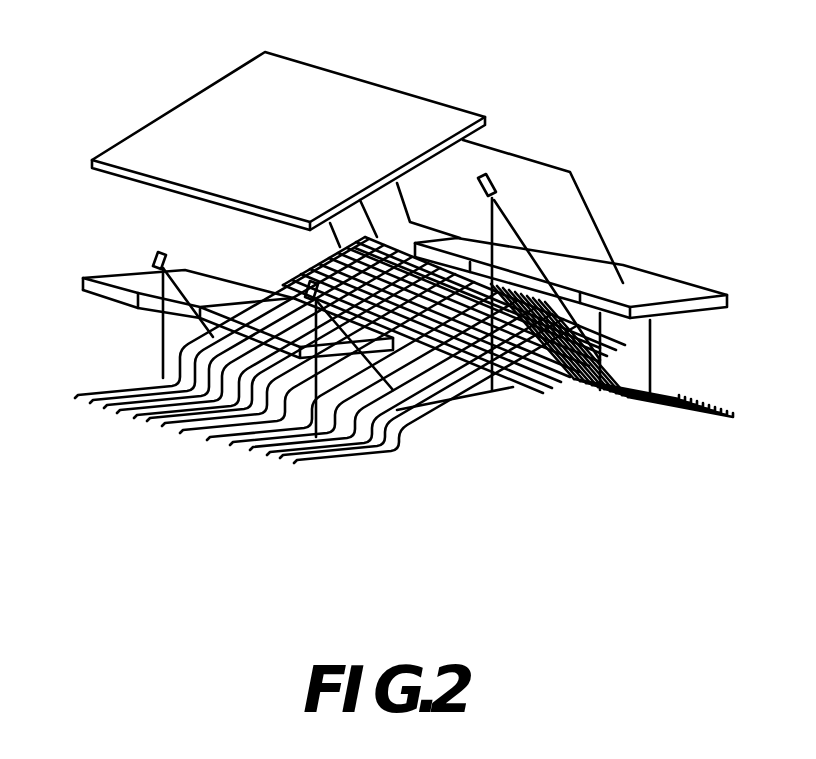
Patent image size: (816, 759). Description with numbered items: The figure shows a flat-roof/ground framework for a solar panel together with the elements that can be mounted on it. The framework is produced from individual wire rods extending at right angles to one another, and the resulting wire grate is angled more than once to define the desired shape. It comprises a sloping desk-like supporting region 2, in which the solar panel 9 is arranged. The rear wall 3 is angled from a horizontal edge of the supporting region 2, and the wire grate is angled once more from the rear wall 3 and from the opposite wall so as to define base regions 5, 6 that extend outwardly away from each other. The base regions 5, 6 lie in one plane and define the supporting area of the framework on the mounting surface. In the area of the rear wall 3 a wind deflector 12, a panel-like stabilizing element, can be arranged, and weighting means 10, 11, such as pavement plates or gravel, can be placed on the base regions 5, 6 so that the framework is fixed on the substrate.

The supporting region 2 is at (423, 403).
The rear wall 3 is at (553, 402).
The base region 5 is at (683, 418).
The base region 6 is at (340, 450).
The solar panel 9 is at (212, 113).
The weighting means 10 is at (122, 280).
The weighting means 11 is at (683, 288).
The wind deflector 12 is at (535, 203).